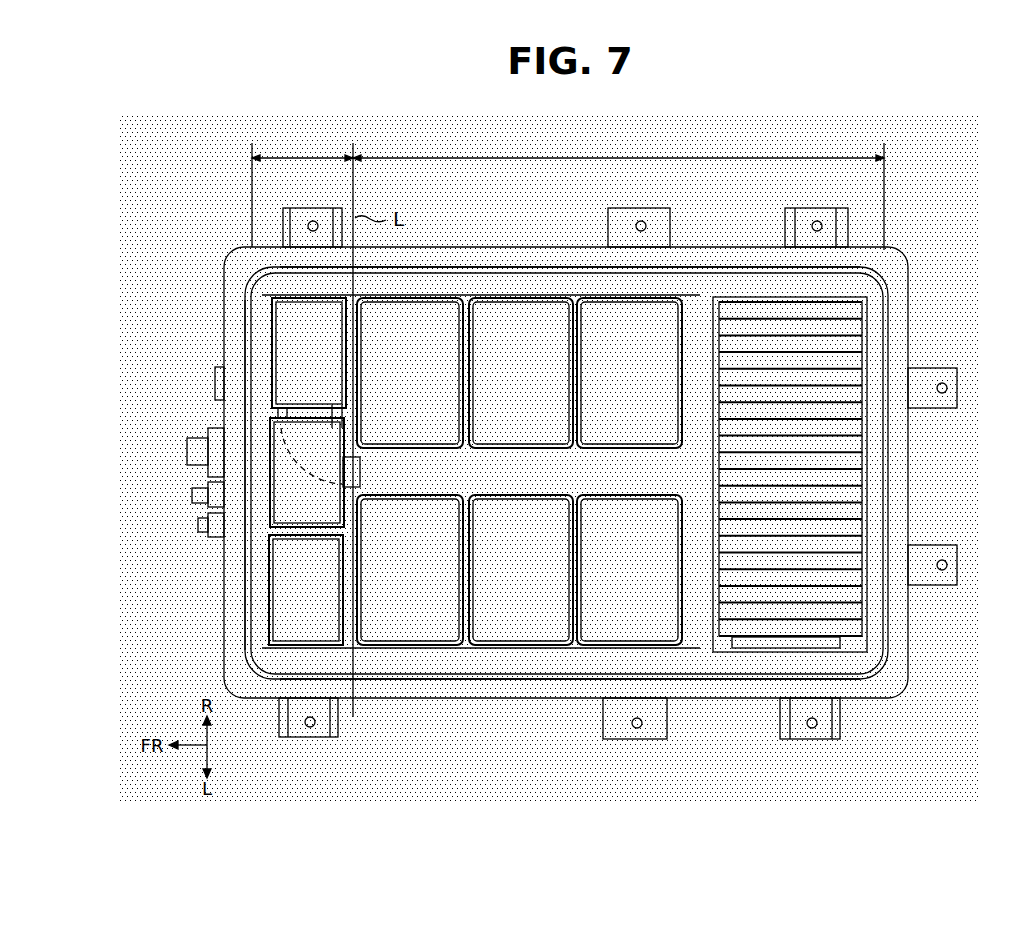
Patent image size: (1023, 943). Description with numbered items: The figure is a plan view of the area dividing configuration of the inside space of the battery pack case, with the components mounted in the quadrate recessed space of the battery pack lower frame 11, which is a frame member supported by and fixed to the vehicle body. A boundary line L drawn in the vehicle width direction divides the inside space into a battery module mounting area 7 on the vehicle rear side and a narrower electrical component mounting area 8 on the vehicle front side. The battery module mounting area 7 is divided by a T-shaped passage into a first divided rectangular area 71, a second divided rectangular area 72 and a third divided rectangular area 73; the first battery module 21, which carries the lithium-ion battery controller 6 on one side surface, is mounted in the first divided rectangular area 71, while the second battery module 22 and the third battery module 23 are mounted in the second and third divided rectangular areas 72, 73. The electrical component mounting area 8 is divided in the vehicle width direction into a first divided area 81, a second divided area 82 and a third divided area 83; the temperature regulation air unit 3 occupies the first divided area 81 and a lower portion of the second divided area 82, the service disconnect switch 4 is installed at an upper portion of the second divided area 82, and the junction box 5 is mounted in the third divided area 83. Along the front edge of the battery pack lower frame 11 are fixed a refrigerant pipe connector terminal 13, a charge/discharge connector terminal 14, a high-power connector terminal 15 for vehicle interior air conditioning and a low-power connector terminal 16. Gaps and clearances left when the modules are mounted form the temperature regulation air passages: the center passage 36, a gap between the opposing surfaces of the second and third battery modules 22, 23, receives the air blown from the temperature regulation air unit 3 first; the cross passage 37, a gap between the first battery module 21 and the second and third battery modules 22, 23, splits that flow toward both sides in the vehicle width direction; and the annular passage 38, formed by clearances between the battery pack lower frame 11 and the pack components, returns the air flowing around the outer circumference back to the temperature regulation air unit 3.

The temperature regulation air unit 3 is at (297, 338).
The service disconnect switch 4 is at (296, 497).
The junction box 5 is at (295, 599).
The lithium-ion battery controller 6 is at (763, 642).
The battery module mounting area 7 is at (618, 430).
The electrical component mounting area 8 is at (566, 411).
The battery pack lower frame 11 is at (412, 688).
The refrigerant pipe connector terminal 13 is at (215, 385).
The charge/discharge connector terminal 14 is at (187, 449).
The high-power connector terminal 15 is at (192, 496).
The low-power connector terminal 16 is at (198, 525).
The first battery module 21 is at (793, 478).
The second battery module 22 is at (518, 365).
The third battery module 23 is at (516, 577).
The center passage 36 is at (537, 473).
The cross passage 37 is at (698, 422).
The annular passage 38 is at (644, 285).
The first divided rectangular area 71 is at (750, 297).
The second divided rectangular area 72 is at (498, 295).
The third divided rectangular area 73 is at (463, 648).
The first divided area 81 is at (247, 265).
The second divided area 82 is at (267, 430).
The third divided area 83 is at (255, 632).